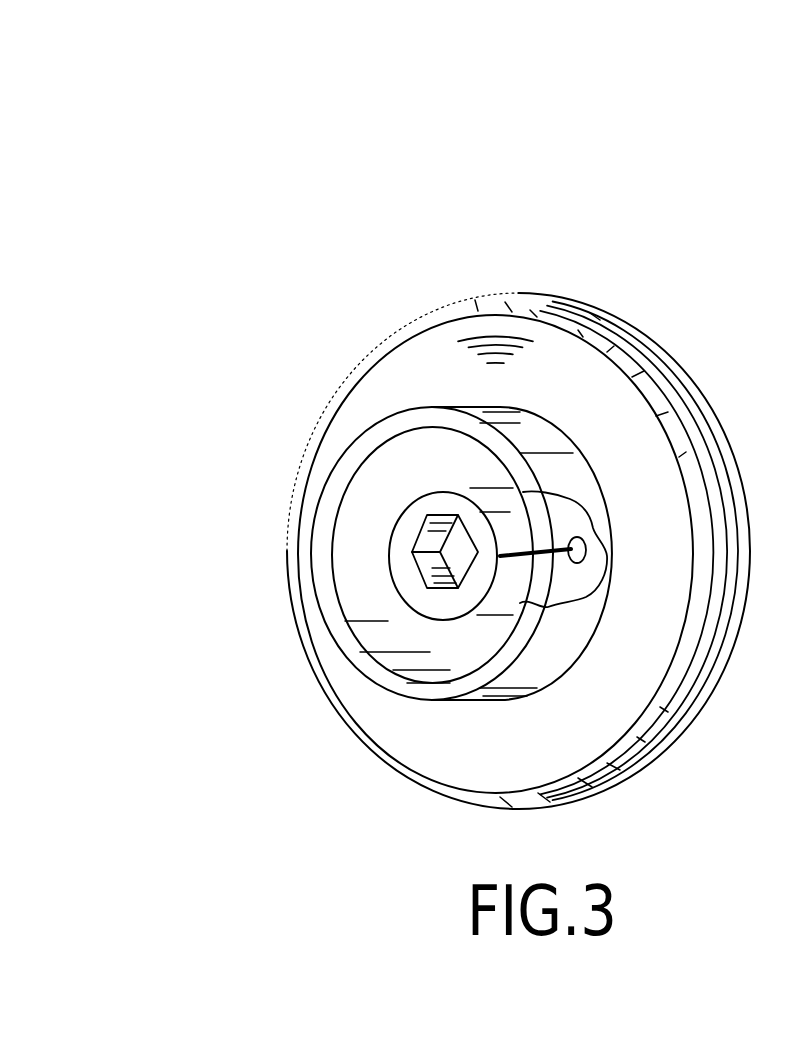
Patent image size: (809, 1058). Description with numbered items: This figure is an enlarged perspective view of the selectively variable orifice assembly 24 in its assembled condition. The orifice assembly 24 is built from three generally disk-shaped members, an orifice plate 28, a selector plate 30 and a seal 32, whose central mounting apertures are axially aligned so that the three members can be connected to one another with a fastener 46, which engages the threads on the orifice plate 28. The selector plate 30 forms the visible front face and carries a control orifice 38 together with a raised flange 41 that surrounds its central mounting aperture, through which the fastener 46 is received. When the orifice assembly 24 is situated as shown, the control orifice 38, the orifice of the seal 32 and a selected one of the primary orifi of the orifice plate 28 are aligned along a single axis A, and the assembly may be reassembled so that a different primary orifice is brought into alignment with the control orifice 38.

The orifice assembly 24 is at (538, 438).
The orifice plate 28 is at (697, 377).
The selector plate 30 is at (563, 327).
The seal 32 is at (658, 360).
The control orifice 38 is at (580, 563).
The raised flange 41 is at (481, 690).
The fastener 46 is at (437, 597).
The axis A is at (530, 545).